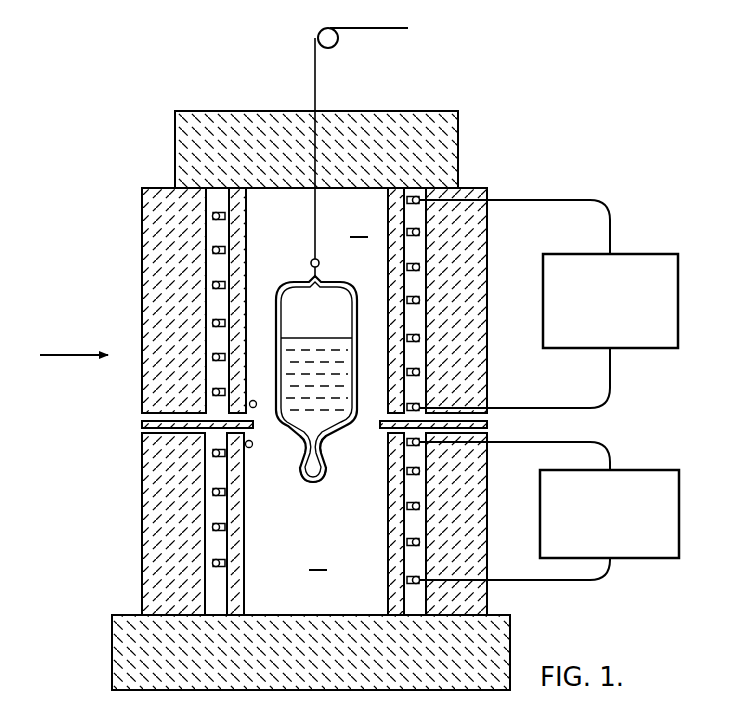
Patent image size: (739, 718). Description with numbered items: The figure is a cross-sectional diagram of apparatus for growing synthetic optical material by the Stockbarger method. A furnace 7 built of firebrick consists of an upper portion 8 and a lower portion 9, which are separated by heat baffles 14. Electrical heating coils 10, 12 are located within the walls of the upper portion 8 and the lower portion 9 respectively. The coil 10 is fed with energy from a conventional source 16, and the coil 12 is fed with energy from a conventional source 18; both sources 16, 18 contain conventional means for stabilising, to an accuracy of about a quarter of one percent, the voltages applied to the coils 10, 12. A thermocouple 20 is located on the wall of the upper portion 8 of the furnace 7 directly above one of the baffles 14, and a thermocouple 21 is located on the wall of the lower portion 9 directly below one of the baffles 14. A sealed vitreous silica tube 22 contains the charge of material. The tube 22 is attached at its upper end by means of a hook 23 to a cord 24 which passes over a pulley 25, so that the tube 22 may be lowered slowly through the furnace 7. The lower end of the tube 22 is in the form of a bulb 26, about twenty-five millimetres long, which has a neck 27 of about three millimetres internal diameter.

The furnace 7 is at (55, 350).
The upper portion 8 is at (359, 223).
The lower portion 9 is at (318, 556).
The electrical heating coil 10 is at (212, 215).
The electrical heating coil 12 is at (212, 454).
The heat baffles 14 is at (142, 422).
The source 16 is at (635, 350).
The source 18 is at (634, 560).
The thermocouple 20 is at (249, 404).
The thermocouple 21 is at (251, 448).
The sealed vitreous silica tube 22 is at (330, 325).
The hook 23 is at (310, 266).
The cord 24 is at (314, 90).
The pulley 25 is at (318, 38).
The bulb 26 is at (325, 467).
The neck 27 is at (327, 431).